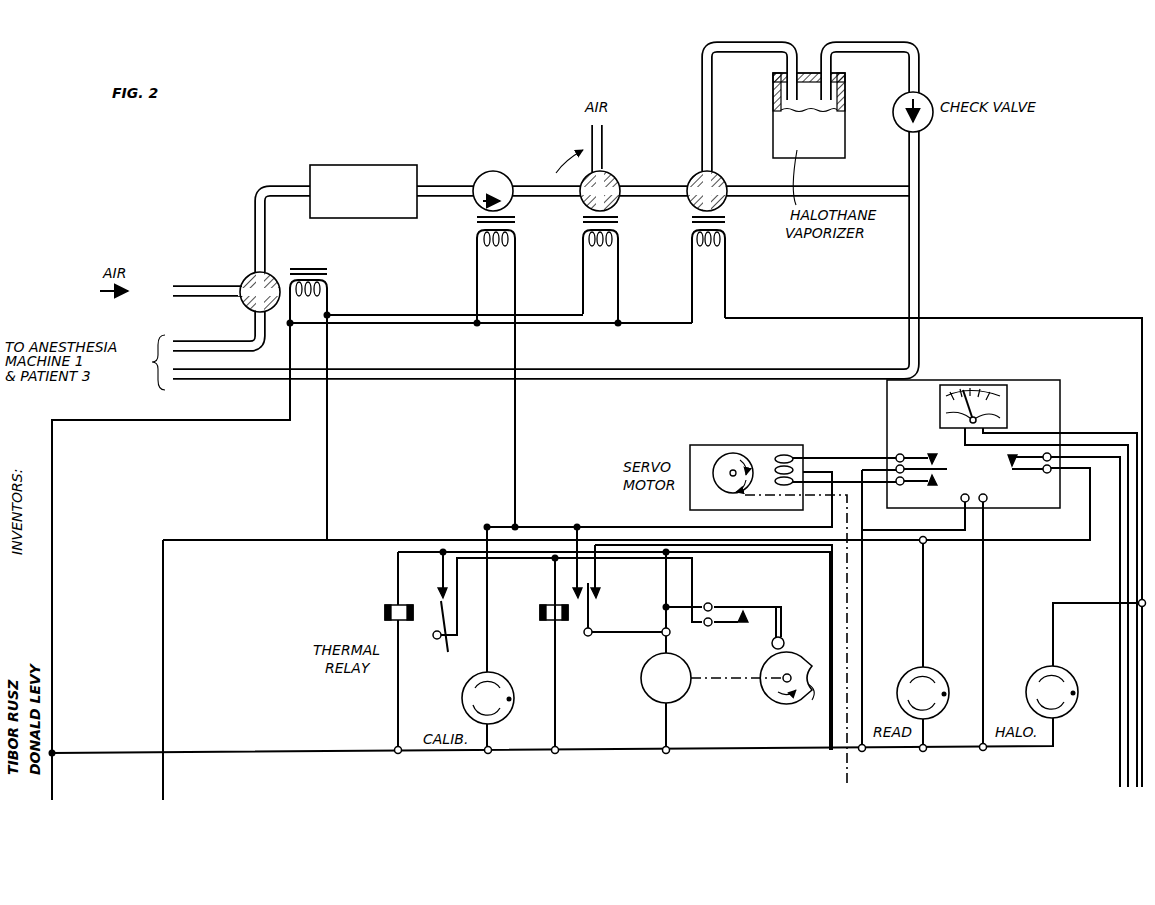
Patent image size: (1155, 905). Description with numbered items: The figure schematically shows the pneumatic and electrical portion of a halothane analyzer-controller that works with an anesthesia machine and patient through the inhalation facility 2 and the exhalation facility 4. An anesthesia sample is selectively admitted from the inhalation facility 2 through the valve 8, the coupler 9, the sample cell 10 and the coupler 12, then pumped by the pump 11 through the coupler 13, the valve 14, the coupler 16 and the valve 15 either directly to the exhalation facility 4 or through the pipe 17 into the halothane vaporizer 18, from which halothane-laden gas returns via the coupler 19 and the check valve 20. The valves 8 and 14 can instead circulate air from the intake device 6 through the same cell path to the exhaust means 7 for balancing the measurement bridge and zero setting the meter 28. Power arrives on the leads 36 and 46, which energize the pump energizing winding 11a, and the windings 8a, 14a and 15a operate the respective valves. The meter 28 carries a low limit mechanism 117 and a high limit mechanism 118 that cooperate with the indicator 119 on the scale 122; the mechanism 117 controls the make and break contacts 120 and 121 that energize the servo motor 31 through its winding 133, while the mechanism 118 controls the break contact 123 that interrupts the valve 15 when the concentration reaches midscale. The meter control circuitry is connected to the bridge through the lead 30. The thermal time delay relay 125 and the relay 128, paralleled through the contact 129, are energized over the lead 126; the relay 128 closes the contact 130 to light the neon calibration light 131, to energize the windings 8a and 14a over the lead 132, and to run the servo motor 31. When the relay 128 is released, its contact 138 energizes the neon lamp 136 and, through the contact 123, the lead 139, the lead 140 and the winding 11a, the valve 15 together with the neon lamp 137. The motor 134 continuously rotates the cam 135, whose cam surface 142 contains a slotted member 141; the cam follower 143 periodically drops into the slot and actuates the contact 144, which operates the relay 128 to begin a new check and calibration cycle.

The inhalation facility 2 is at (206, 340).
The exhalation facility 4 is at (868, 180).
The intake device 6 is at (207, 287).
The exhaust means 7 is at (604, 153).
The valve 8 is at (247, 306).
The winding of valve 8 8a is at (308, 297).
The coupler 9 is at (254, 201).
The sample cell 10 is at (345, 165).
The pump 11 is at (503, 173).
The pump energizing winding 11a is at (496, 372).
The coupler 12 is at (451, 184).
The coupler 13 is at (541, 197).
The valve 14 is at (621, 181).
The winding of valve 14 14a is at (600, 270).
The valve 15 is at (728, 181).
The winding of valve 15 15a is at (708, 270).
The coupler 16 is at (650, 197).
The pipe to vaporizer 17 is at (714, 101).
The halothane vaporizer 18 is at (847, 139).
The coupler 19 is at (892, 44).
The check valve 20 is at (926, 96).
The meter 28 is at (1062, 413).
The lead 30 is at (1127, 692).
The servo motor 31 is at (722, 445).
The lead 36 is at (55, 483).
The lead 46 is at (518, 442).
The low limit mechanism 117 is at (946, 412).
The high limit mechanism 118 is at (1003, 420).
The indicator 119 is at (970, 386).
The make and break contact 120 is at (960, 620).
The make and break contact 121 is at (940, 456).
The meter scale 122 is at (1008, 398).
The break contact 123 is at (1010, 466).
The thermal time delay relay 125 is at (383, 617).
The lead 126 is at (396, 582).
The relay 128 is at (540, 614).
The contact 129 is at (567, 610).
The contact 130 is at (586, 612).
The neon calibration light 131 is at (462, 697).
The lead 132 is at (330, 443).
The winding 133 is at (783, 455).
The motor 134 is at (642, 685).
The cam 135 is at (762, 690).
The neon lamp 136 is at (906, 672).
The neon lamp 137 is at (1032, 669).
The relay contact 138 is at (598, 600).
The lead 139 is at (1119, 734).
The lead 140 is at (1136, 751).
The slotted member 141 is at (813, 700).
The cam surface 142 is at (778, 703).
The cam follower 143 is at (786, 636).
The contact 144 is at (748, 607).